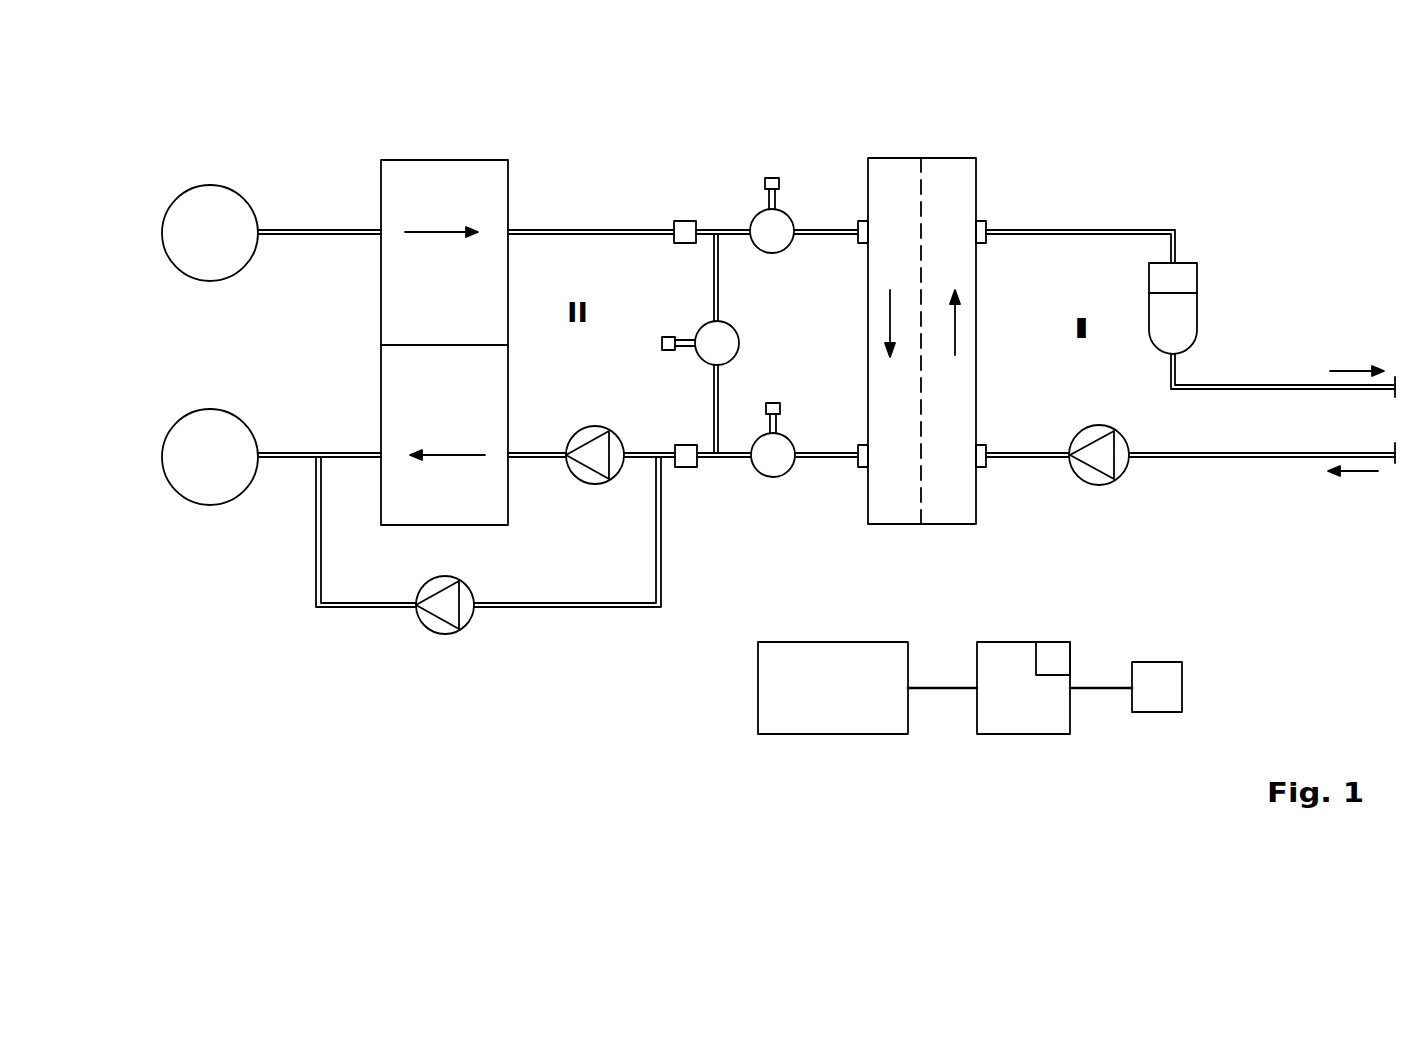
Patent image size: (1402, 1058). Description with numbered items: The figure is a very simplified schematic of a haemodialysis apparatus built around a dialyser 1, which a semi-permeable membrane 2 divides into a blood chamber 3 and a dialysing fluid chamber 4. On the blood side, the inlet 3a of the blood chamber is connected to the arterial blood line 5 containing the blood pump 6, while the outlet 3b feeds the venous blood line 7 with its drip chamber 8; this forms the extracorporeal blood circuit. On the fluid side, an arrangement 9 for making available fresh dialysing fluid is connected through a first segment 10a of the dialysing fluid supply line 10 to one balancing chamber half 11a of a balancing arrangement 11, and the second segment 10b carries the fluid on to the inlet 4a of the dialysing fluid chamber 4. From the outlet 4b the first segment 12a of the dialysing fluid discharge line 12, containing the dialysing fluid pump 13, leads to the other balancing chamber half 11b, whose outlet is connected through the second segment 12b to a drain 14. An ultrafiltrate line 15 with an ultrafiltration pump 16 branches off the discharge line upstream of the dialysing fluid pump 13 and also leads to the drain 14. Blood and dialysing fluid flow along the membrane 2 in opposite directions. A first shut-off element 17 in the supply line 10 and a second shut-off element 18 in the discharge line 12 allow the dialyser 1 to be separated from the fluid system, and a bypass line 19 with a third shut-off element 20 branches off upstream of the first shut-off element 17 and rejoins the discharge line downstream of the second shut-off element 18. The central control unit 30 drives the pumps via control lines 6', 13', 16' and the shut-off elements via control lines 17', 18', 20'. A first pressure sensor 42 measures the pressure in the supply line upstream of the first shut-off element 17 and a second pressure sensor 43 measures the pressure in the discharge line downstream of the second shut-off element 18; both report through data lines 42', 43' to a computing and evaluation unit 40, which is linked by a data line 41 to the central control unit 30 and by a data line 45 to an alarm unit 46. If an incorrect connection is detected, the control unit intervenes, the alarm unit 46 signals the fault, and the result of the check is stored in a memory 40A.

The dialyser 1 is at (923, 148).
The semi-permeable membrane 2 is at (925, 190).
The blood chamber 3 is at (977, 330).
The inlet of the blood chamber 3a is at (986, 445).
The outlet of the blood chamber 3b is at (982, 244).
The dialysing fluid chamber 4 is at (866, 330).
The inlet of the dialysing fluid chamber 4a is at (862, 243).
The outlet of the dialysing fluid chamber 4b is at (860, 445).
The arterial blood line 5 is at (1260, 460).
The blood pump 6 is at (1057, 483).
The control line 6' is at (1102, 520).
The venous blood line 7 is at (1093, 227).
The drip chamber 8 is at (1198, 310).
The arrangement for making available fresh dialysing fluid 9 is at (215, 185).
The dialysing fluid supply line 10 is at (582, 228).
The first segment of the dialysing fluid supply line 10a is at (322, 228).
The second segment of the dialysing fluid supply line 10b is at (627, 228).
The balancing arrangement 11 is at (362, 328).
The balancing chamber half 11a is at (465, 160).
The other balancing chamber half 11b is at (455, 524).
The dialysing fluid discharge line 12 is at (717, 461).
The first segment of the dialysing fluid discharge line 12a is at (828, 460).
The second segment of the dialysing fluid discharge line 12b is at (297, 452).
The dialysing fluid pump 13 is at (566, 429).
The control line 13' is at (597, 520).
The drain 14 is at (210, 505).
The ultrafiltrate line 15 is at (535, 608).
The ultrafiltration pump 16 is at (419, 639).
The control line 16' is at (447, 671).
The first shut-off element 17 is at (799, 193).
The control line 17' is at (776, 148).
The second shut-off element 18 is at (773, 486).
The control line 18' is at (776, 372).
The bypass line 19 is at (720, 280).
The third shut-off element 20 is at (681, 327).
The control line 20' is at (643, 346).
The central control unit 30 is at (832, 735).
The computing and evaluation unit 40 is at (998, 642).
The memory 40A is at (1052, 655).
The data line 41 is at (942, 686).
The first pressure sensor 42 is at (643, 255).
The data line 42' is at (685, 185).
The second pressure sensor 43 is at (647, 424).
The data line 43' is at (689, 503).
The data line 45 is at (1105, 686).
The alarm unit 46 is at (1157, 660).